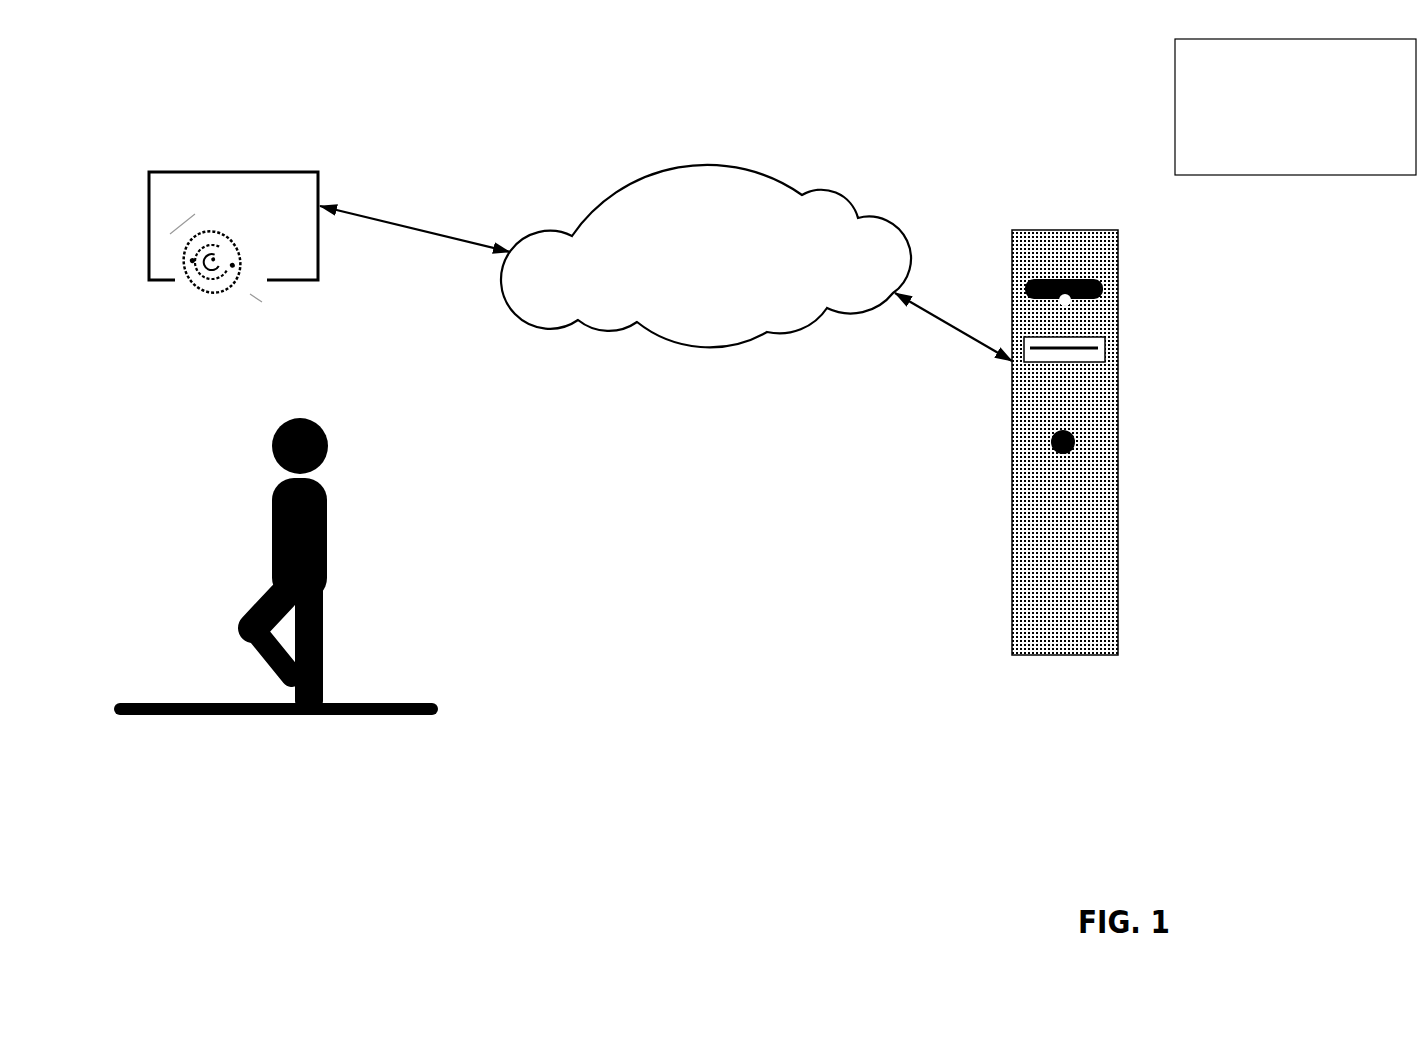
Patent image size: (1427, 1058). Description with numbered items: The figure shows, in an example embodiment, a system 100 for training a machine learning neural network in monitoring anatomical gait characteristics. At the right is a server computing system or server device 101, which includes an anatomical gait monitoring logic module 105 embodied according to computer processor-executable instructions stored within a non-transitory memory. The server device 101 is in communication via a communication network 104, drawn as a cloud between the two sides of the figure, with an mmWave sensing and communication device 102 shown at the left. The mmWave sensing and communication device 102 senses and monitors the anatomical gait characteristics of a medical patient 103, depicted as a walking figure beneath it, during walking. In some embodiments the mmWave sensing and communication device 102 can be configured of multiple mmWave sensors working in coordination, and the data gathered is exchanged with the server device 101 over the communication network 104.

The system 100 is at (683, 44).
The server computing system 101 is at (1042, 521).
The mmWave sensing and communication device 102 is at (293, 211).
The medical patient 103 is at (320, 420).
The communication network 104 is at (735, 329).
The anatomical gait monitoring logic module 105 is at (1100, 230).